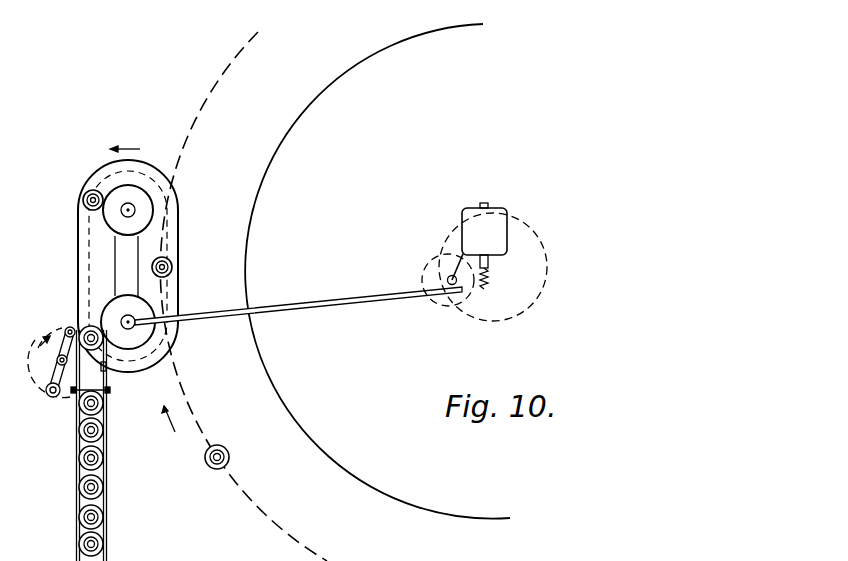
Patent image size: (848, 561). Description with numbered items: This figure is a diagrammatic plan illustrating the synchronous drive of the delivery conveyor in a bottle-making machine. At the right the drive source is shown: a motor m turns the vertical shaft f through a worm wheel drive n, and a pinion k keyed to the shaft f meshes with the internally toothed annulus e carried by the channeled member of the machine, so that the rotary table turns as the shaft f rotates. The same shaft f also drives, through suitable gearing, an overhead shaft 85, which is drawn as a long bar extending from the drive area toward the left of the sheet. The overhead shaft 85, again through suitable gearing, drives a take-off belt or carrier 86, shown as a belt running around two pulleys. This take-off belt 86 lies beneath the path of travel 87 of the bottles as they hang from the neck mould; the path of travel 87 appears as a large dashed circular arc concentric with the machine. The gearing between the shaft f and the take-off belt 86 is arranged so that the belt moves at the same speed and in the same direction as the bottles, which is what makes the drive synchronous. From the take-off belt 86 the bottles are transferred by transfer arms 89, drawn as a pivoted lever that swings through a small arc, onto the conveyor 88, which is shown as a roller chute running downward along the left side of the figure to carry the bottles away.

The overhead shaft 85 is at (338, 298).
The take-off belt 86 is at (167, 237).
The path of travel 87 is at (252, 498).
The conveyor 88 is at (76, 470).
The transfer arms 89 is at (46, 392).
The pinion k is at (450, 252).
The motor m is at (492, 227).
The shaft f is at (447, 280).
The worm wheel drive n is at (480, 288).
The internally toothed annulus e is at (478, 322).